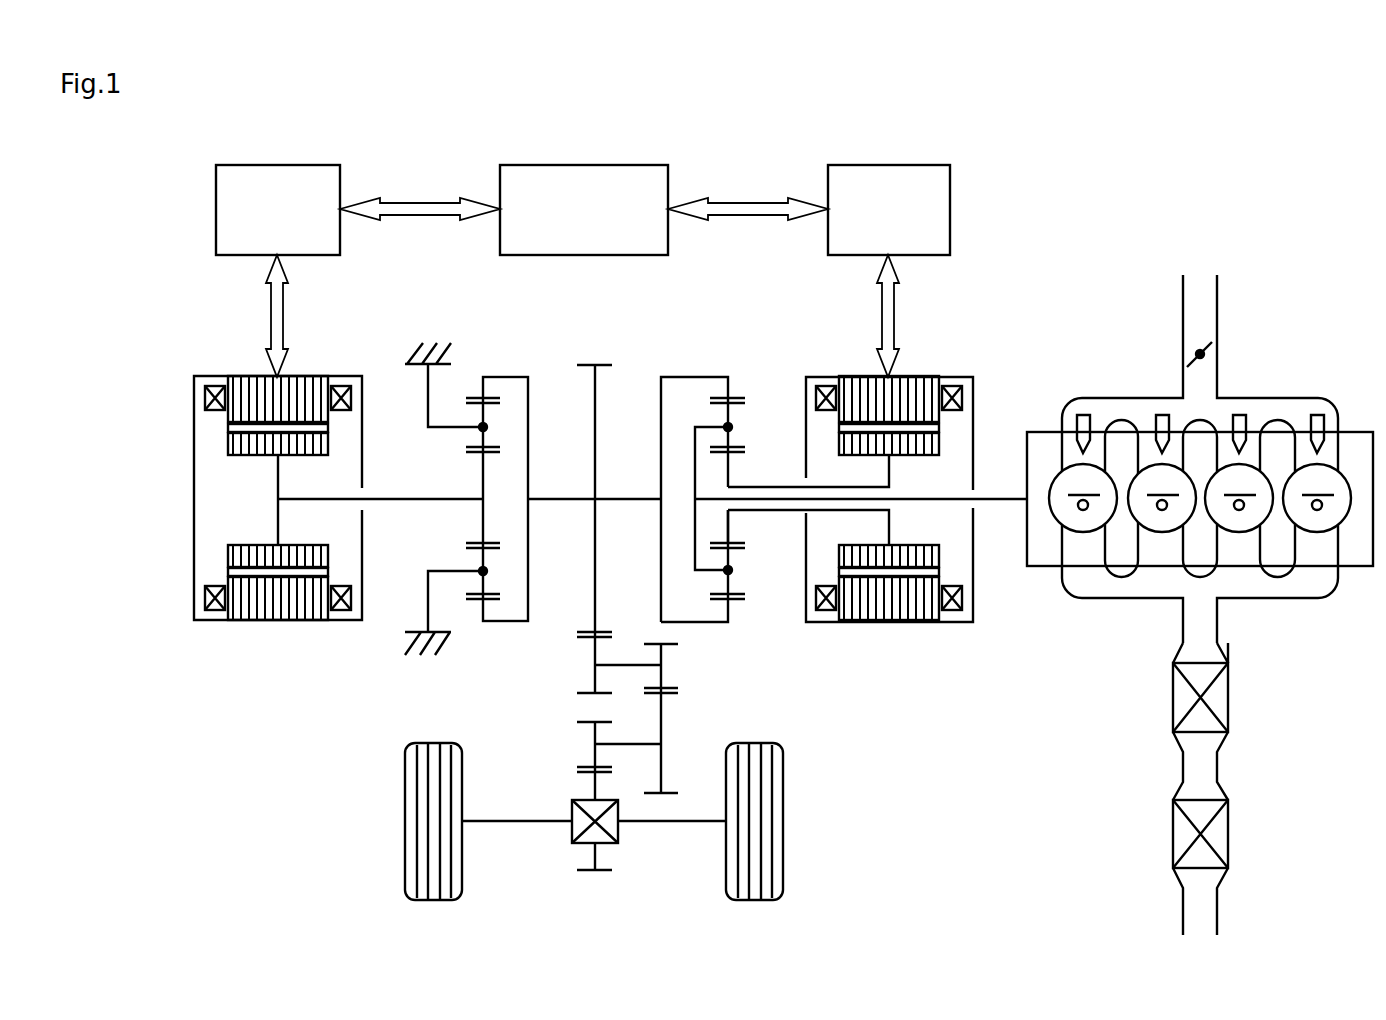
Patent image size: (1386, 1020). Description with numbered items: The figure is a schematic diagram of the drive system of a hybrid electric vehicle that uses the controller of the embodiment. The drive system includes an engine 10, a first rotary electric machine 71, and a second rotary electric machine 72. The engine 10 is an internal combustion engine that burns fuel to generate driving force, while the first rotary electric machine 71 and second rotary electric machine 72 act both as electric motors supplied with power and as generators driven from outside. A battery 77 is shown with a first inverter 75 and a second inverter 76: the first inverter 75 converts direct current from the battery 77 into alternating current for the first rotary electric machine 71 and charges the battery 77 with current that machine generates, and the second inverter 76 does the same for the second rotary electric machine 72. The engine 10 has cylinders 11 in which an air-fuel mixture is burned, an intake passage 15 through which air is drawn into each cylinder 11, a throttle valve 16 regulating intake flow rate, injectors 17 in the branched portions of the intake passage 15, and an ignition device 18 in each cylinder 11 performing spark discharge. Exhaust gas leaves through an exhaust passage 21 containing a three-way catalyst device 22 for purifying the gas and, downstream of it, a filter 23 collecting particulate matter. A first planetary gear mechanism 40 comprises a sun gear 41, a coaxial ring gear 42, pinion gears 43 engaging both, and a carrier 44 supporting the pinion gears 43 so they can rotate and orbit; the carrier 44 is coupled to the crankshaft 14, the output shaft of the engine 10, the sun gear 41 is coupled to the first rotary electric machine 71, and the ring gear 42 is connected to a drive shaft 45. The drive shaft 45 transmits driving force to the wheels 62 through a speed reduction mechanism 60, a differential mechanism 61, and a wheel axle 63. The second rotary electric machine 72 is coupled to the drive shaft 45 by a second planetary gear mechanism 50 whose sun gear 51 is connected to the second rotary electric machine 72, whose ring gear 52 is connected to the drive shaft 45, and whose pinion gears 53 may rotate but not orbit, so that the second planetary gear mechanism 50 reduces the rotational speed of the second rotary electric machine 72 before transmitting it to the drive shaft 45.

The engine 10 is at (1050, 375).
The cylinder 11 is at (1200, 498).
The crankshaft 14 is at (1003, 502).
The intake passage 15 is at (1183, 318).
The throttle valve 16 is at (1213, 343).
The injector 17 is at (1160, 413).
The ignition device 18 is at (1314, 538).
The exhaust passage 21 is at (1183, 768).
The three-way catalyst device 22 is at (1222, 697).
The filter 23 is at (1222, 832).
The first planetary gear mechanism 40 is at (671, 352).
The sun gear 41 is at (728, 527).
The ring gear 42 is at (729, 390).
The pinion gear 43 is at (730, 440).
The carrier 44 is at (692, 513).
The drive shaft 45 is at (627, 495).
The second planetary gear mechanism 50 is at (519, 352).
The sun gear 51 is at (482, 523).
The ring gear 52 is at (477, 389).
The pinion gear 53 is at (480, 437).
The speed reduction mechanism 60 is at (557, 682).
The differential mechanism 61 is at (570, 833).
The wheel 62 is at (405, 790).
The wheel axle 63 is at (662, 822).
The first rotary electric machine 71 is at (822, 377).
The second rotary electric machine 72 is at (213, 376).
The first inverter 75 is at (847, 165).
The second inverter 76 is at (236, 165).
The battery 77 is at (519, 165).